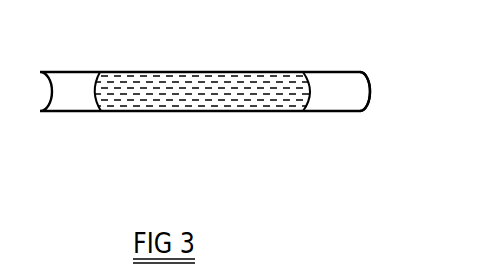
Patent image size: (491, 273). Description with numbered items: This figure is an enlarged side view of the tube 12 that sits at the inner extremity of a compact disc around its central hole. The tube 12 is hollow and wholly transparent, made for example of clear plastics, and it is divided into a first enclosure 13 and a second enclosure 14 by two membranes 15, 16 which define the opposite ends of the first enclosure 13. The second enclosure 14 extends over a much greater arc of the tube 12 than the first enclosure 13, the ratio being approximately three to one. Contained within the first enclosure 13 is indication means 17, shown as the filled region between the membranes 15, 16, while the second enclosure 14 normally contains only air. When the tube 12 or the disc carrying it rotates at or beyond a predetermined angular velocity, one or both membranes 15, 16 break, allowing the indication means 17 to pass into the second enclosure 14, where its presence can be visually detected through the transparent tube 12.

The tube 12 is at (358, 72).
The first enclosure 13 is at (235, 112).
The second enclosure 14 is at (358, 88).
The membrane 15 is at (94, 95).
The membrane 16 is at (316, 90).
The indication means 17 is at (148, 102).